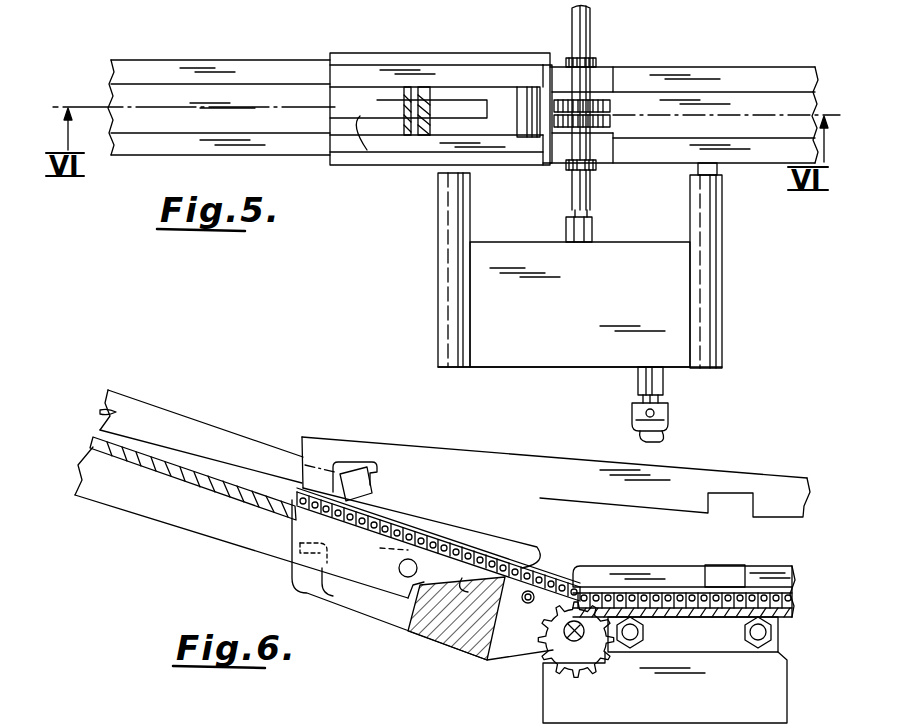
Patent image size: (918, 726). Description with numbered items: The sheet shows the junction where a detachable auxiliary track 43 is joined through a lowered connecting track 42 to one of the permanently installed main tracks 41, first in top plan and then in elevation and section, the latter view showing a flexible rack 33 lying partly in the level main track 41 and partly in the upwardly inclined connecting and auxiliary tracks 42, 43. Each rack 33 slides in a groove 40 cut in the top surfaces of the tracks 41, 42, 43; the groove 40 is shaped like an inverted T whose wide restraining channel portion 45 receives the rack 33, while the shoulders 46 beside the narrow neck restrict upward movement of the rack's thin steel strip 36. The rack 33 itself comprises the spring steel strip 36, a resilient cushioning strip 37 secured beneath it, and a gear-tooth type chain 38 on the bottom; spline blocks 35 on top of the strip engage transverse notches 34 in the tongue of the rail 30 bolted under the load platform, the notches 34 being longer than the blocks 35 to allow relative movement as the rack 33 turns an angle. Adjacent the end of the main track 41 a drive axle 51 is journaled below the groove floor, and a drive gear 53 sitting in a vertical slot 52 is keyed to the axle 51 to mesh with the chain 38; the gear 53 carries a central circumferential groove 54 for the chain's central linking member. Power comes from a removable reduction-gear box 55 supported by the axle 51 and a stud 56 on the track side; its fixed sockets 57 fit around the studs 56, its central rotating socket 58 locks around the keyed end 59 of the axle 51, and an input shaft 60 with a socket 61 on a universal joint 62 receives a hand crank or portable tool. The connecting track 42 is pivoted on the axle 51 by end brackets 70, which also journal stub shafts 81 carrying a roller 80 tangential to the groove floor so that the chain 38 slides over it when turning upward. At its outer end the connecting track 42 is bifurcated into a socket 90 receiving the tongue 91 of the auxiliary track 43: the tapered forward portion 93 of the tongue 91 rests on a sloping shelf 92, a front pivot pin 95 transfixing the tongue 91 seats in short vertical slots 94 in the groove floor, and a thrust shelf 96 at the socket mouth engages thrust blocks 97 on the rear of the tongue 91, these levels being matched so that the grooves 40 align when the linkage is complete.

In FIG. 6, the rail 30 is at (542, 466).
In FIG. 6, the flexible rack 33 is at (563, 572).
In FIG. 6, the transverse notches 34 is at (378, 475).
In FIG. 6, the spline blocks 35 is at (348, 484).
In FIG. 6, the steel strip 36 is at (668, 600).
In FIG. 6, the resilient cushioning strip 37 is at (666, 610).
In FIG. 6, the gear-tooth type chain 38 is at (705, 612).
In FIG. 5, the groove 40 is at (272, 85).
In FIG. 6, the groove 40 is at (225, 445).
In FIG. 5, the main track 41 is at (745, 68).
In FIG. 6, the main track 41 is at (780, 572).
In FIG. 5, the connecting track 42 is at (380, 55).
In FIG. 6, the connecting track 42 is at (455, 630).
In FIG. 5, the auxiliary track 43 is at (228, 68).
In FIG. 6, the auxiliary track 43 is at (196, 517).
In FIG. 6, the wide restraining channel portion 45 is at (165, 440).
In FIG. 6, the shoulders 46 is at (100, 411).
In FIG. 5, the drive axle 51 is at (590, 30).
In FIG. 6, the drive axle 51 is at (572, 634).
In FIG. 5, the vertical slot 52 is at (598, 96).
In FIG. 5, the drive gear 53 is at (603, 100).
In FIG. 6, the drive gear 53 is at (584, 656).
In FIG. 5, the central circumferential groove 54 is at (612, 113).
In FIG. 5, the reduction-gear box 55 is at (588, 306).
In FIG. 5, the stud 56 is at (717, 168).
In FIG. 5, the fixed sockets 57 is at (445, 220).
In FIG. 5, the central rotating socket 58 is at (567, 230).
In FIG. 5, the keyed end 59 is at (596, 221).
In FIG. 5, the input shaft 60 is at (638, 383).
In FIG. 5, the socket 61 is at (641, 436).
In FIG. 5, the universal joint 62 is at (632, 414).
In FIG. 5, the end brackets 70 is at (572, 55).
In FIG. 5, the roller 80 is at (518, 100).
In FIG. 6, the roller 80 is at (516, 609).
In FIG. 6, the stub shafts 81 is at (532, 605).
In FIG. 5, the socket 90 is at (370, 136).
In FIG. 5, the tongue 91 is at (470, 108).
In FIG. 6, the tongue 91 is at (352, 518).
In FIG. 6, the sloping shelf 92 is at (472, 594).
In FIG. 6, the tapered forward portion 93 is at (460, 620).
In FIG. 5, the vertical slots 94 is at (432, 95).
In FIG. 6, the vertical slots 94 is at (382, 550).
In FIG. 5, the front pivot pin 95 is at (420, 85).
In FIG. 6, the front pivot pin 95 is at (402, 575).
In FIG. 6, the thrust shelf 96 is at (298, 546).
In FIG. 6, the thrust blocks 97 is at (313, 560).